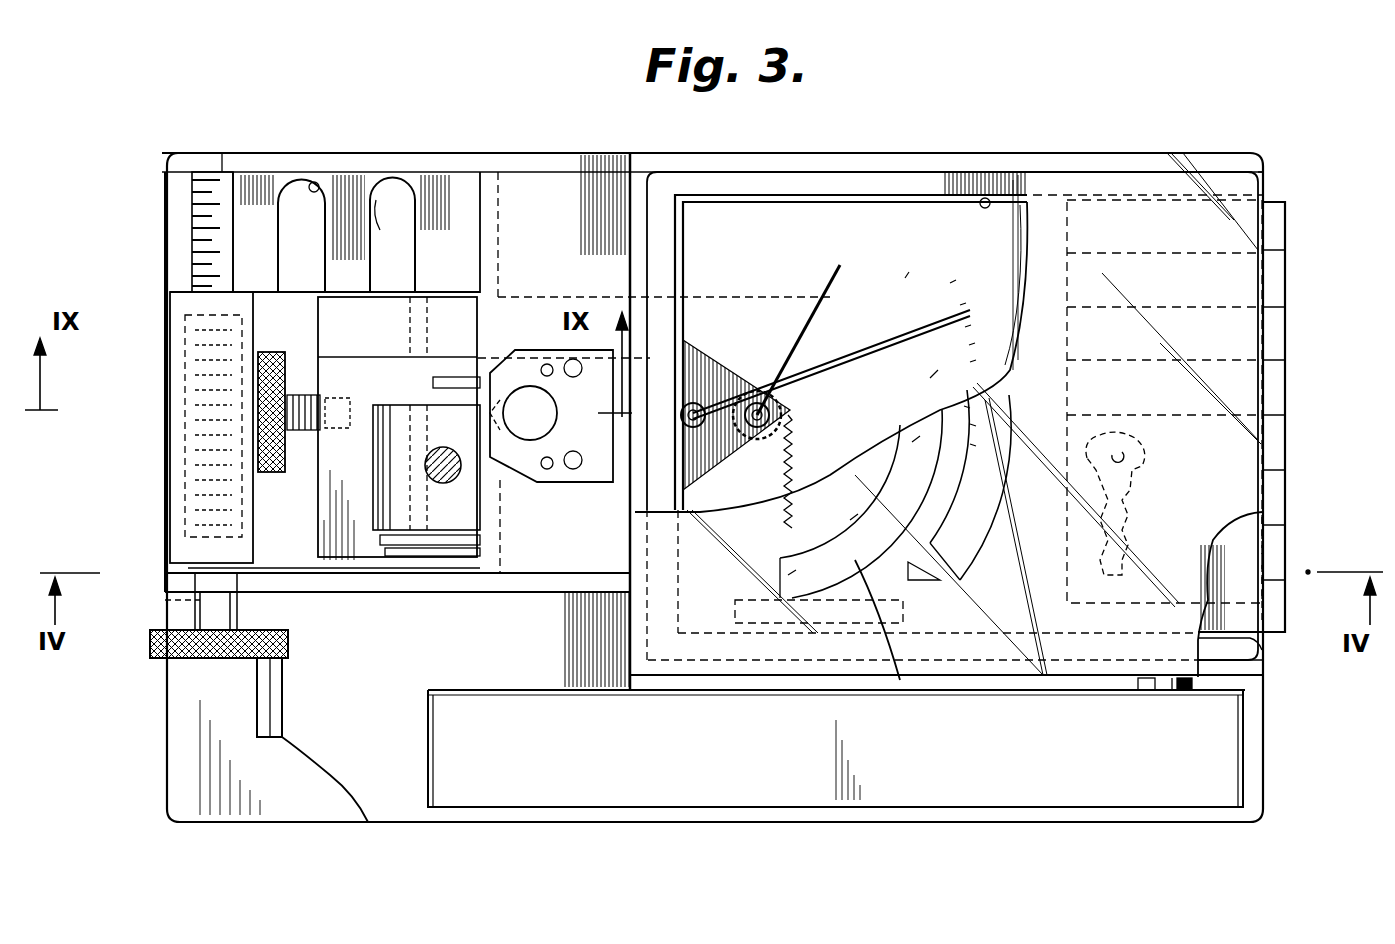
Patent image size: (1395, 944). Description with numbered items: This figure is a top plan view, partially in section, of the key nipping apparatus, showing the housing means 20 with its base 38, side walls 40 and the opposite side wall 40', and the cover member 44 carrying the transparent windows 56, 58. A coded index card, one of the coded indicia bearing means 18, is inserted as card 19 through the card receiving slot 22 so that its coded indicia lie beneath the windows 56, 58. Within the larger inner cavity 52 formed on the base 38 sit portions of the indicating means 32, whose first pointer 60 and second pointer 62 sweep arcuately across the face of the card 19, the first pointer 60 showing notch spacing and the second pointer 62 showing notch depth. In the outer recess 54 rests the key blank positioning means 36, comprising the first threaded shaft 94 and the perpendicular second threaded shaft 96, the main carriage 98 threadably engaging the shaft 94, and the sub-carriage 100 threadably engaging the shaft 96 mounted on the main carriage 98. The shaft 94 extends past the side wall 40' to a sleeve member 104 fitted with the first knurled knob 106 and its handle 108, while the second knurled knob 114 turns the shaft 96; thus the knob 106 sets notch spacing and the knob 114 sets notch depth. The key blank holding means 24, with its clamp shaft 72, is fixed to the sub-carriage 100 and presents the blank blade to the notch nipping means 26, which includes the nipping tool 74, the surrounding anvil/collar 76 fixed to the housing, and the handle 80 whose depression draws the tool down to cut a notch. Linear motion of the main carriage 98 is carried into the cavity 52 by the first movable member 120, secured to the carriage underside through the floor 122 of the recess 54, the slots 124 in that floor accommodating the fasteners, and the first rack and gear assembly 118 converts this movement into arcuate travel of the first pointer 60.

The coded indicia bearing means 18 is at (1290, 224).
The index card 19 is at (1245, 552).
The housing means 20 is at (572, 152).
The card receiving slot 22 is at (986, 198).
The key blank holding means 24 is at (493, 530).
The notch nipping means 26 is at (520, 450).
The indicating means 32 is at (855, 292).
The key blank positioning means 36 is at (155, 390).
The base 38 is at (200, 783).
The side walls 40 is at (396, 120).
The side wall 40' is at (705, 662).
The cover member 44 is at (1053, 237).
The larger inner cavity 52 is at (1152, 684).
The outer recess 54 is at (325, 232).
The transparent window 56 is at (900, 680).
The transparent window 58 is at (963, 520).
The first pointer 60 is at (790, 325).
The second pointer 62 is at (975, 314).
The shaft 72 is at (457, 483).
The nipping tool 74 is at (525, 395).
The anvil/collar 76 is at (585, 432).
The handle 80 is at (1163, 768).
The first threaded shaft 94 is at (205, 205).
The second threaded shaft 96 is at (300, 392).
The main carriage 98 is at (180, 488).
The sub-carriage 100 is at (399, 428).
The sleeve member 104 is at (205, 608).
The first knurled knob 106 is at (150, 658).
The handle 108 is at (368, 822).
The second knurled knob 114 is at (300, 440).
The first rack and gear assembly 118 is at (780, 478).
The first movable member 120 is at (705, 300).
The floor 122 is at (448, 175).
The slots 124 is at (372, 175).